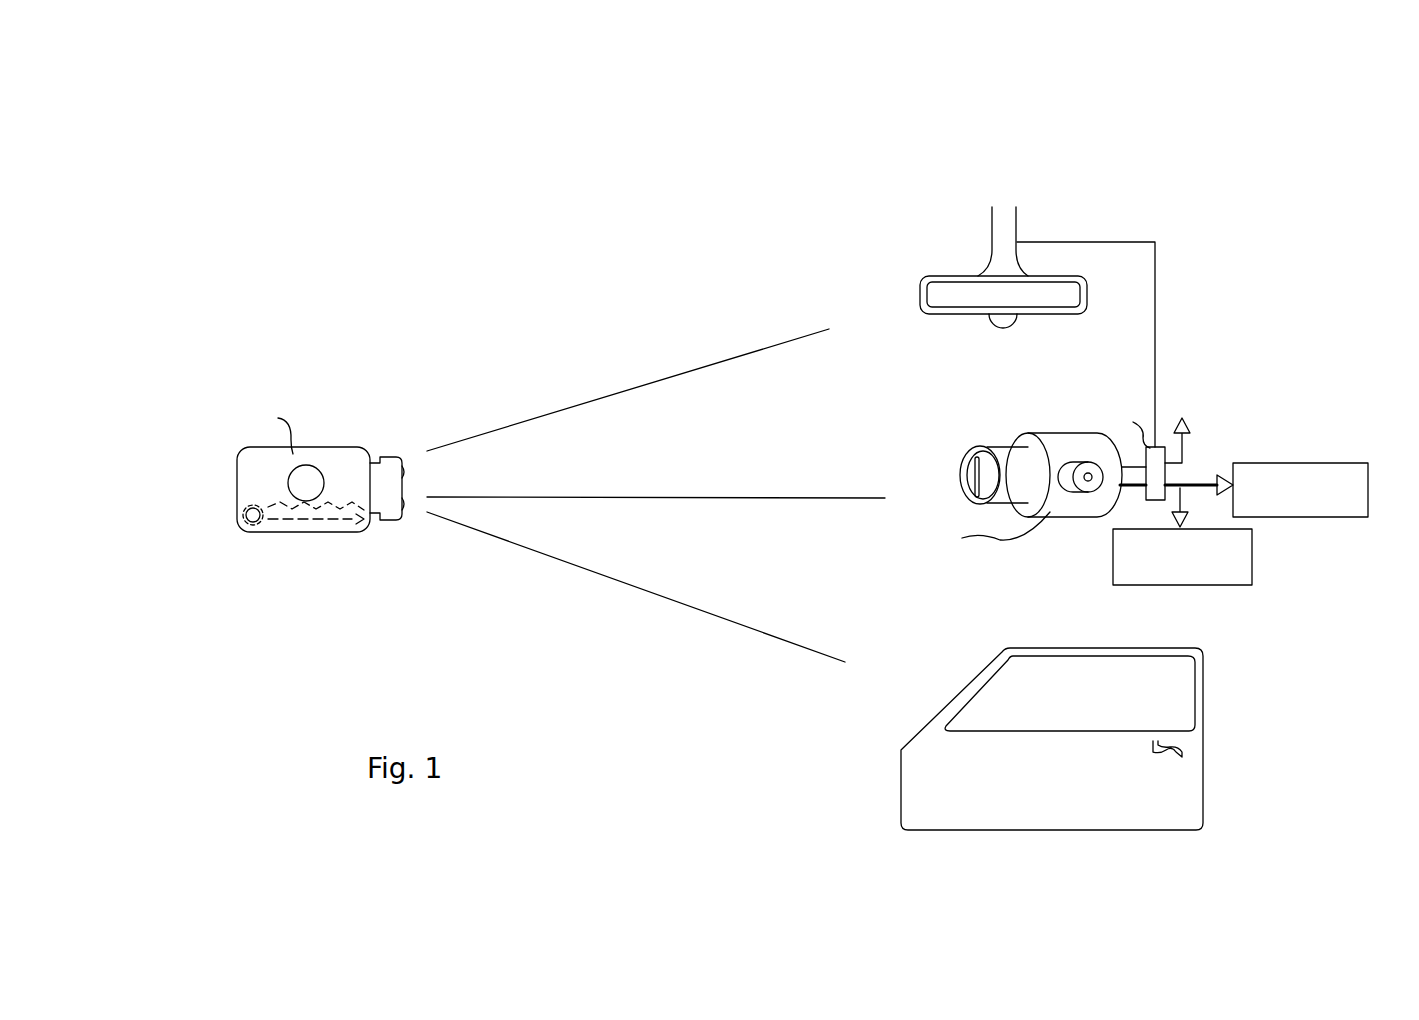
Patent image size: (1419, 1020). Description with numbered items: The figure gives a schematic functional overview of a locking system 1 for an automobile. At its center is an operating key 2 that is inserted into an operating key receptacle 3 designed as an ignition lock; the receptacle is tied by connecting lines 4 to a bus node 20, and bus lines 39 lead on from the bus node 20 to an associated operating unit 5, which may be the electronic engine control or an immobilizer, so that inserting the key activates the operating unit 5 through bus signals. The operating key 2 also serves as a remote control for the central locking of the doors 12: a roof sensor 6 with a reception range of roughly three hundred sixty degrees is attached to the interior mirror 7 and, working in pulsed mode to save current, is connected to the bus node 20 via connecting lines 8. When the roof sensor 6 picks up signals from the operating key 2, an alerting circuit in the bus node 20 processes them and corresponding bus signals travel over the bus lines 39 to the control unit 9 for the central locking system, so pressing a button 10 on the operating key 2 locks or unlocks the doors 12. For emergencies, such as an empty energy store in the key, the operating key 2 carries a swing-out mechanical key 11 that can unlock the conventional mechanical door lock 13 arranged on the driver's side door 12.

The locking system 1 is at (603, 197).
The operating key 2 is at (245, 480).
The button 10 is at (308, 477).
The mechanical key 11 is at (260, 520).
The interior mirror 7 is at (957, 293).
The roof sensor 6 is at (1003, 328).
The connecting lines 8 is at (1160, 270).
The operating key receptacle 3 is at (1092, 445).
The bus node 20 is at (1158, 453).
The connecting lines 4 is at (1132, 488).
The bus lines 39 is at (1210, 474).
The control unit 9 is at (1335, 500).
The operating unit 5 is at (1220, 562).
The door 12 is at (1023, 802).
The mechanical door lock 13 is at (1182, 757).